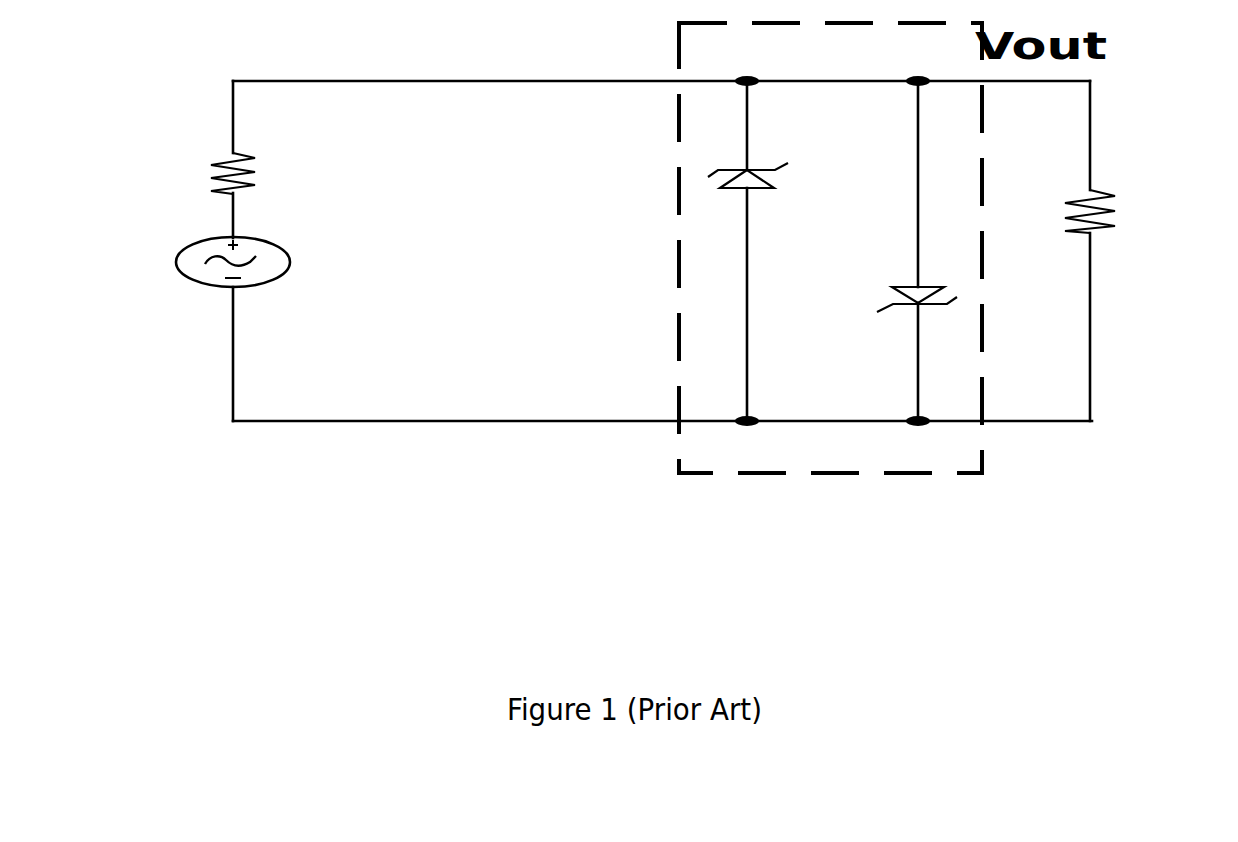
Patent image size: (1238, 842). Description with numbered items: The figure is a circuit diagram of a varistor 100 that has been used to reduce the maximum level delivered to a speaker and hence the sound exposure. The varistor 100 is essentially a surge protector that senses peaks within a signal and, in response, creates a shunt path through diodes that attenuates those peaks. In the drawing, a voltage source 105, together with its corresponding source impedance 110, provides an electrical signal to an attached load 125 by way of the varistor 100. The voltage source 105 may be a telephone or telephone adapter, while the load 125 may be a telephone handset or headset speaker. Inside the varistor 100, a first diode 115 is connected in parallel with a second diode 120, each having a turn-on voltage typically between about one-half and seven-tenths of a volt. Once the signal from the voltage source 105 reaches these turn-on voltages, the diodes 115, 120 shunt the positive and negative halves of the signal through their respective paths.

The varistor 100 is at (979, 473).
The voltage source 105 is at (291, 265).
The source impedance 110 is at (258, 174).
The first diode 115 is at (775, 186).
The second diode 120 is at (936, 284).
The load 125 is at (1117, 196).